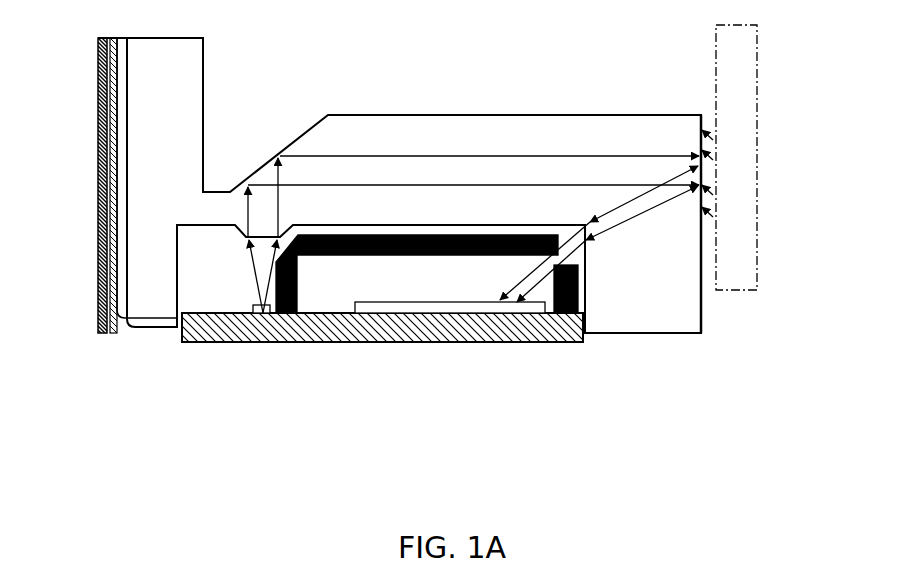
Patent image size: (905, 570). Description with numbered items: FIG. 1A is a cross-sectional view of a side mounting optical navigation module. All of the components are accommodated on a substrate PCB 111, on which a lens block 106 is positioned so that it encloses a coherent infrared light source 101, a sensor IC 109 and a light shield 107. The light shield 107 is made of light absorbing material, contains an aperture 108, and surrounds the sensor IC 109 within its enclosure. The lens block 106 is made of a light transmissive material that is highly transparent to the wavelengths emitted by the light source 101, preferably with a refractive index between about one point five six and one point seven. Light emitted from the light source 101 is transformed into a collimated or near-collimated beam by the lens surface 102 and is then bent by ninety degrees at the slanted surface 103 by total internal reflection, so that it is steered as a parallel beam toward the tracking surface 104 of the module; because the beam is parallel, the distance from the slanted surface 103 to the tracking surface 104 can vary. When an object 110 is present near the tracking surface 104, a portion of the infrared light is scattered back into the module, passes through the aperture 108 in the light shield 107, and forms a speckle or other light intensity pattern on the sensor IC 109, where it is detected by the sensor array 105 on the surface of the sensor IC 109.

The coherent infrared light source 101 is at (264, 313).
The lens surface 102 is at (237, 228).
The slanted surface 103 is at (275, 155).
The tracking surface 104 is at (686, 137).
The sensor array 105 is at (540, 330).
The lens block 106 is at (462, 131).
The light shield 107 is at (393, 255).
The aperture 108 is at (557, 257).
The sensor IC 109 is at (357, 320).
The object 110 is at (752, 167).
The substrate PCB 111 is at (453, 313).